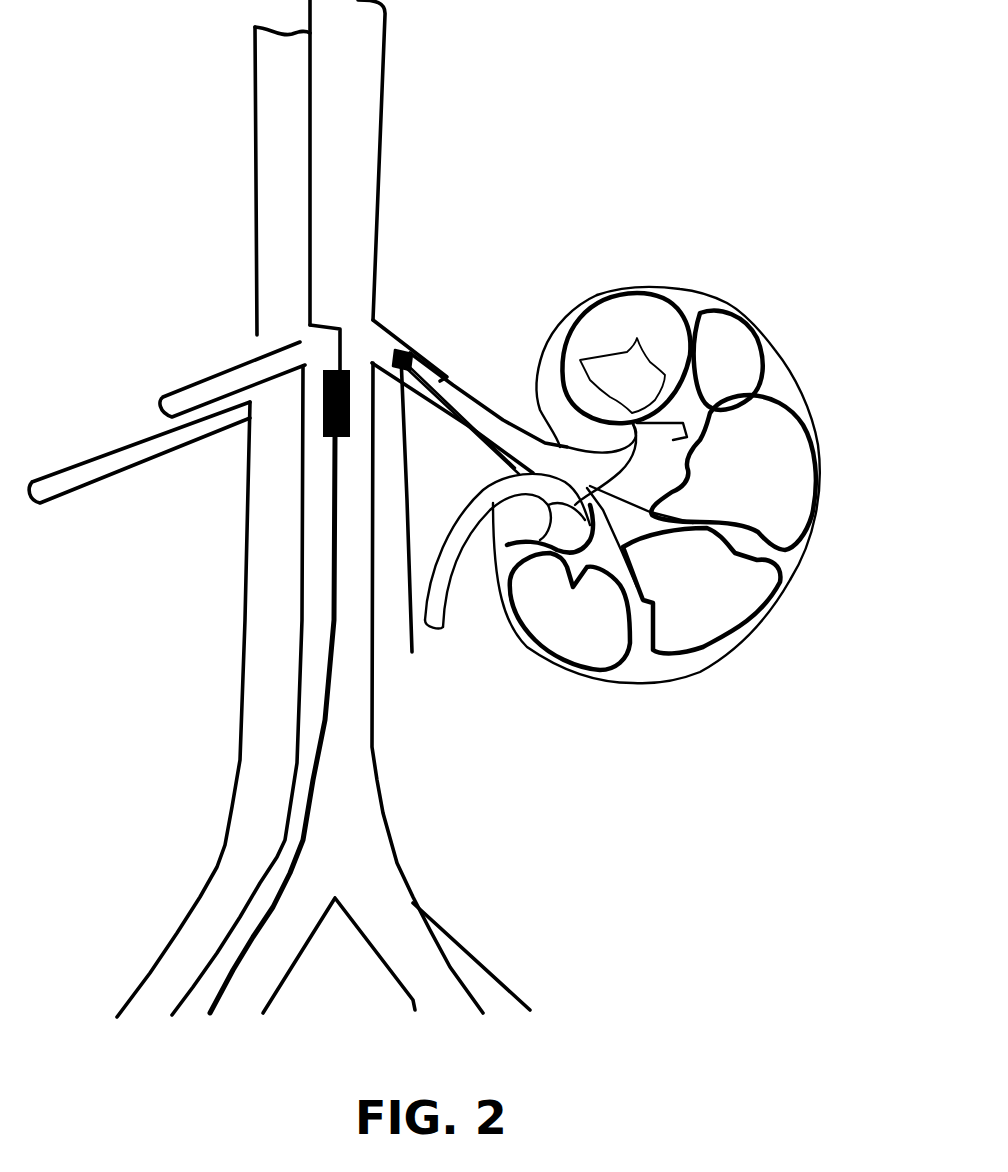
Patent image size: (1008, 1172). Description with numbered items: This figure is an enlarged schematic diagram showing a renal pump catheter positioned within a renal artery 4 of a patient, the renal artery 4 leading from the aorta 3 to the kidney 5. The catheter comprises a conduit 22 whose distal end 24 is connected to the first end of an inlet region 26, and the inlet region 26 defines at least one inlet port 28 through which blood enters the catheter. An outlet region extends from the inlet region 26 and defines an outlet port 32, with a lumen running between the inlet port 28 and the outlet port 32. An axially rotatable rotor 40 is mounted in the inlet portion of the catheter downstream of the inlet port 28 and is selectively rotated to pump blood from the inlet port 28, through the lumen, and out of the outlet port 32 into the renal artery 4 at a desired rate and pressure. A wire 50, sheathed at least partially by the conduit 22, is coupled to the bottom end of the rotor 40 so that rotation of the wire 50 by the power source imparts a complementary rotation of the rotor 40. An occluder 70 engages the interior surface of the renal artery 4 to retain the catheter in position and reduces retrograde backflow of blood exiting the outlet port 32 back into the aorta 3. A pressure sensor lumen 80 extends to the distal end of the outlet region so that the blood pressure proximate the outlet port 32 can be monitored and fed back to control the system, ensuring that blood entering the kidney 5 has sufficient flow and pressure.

The aorta 3 is at (350, 232).
The renal artery 4 is at (375, 333).
The kidney 5 is at (770, 331).
The conduit 22 is at (205, 725).
The pressure sensor lumen 80 is at (327, 573).
The distal end of the conduit 24 is at (340, 328).
The inlet region 26 is at (323, 382).
The inlet port 28 is at (323, 420).
The outlet port 32 is at (449, 377).
The rotor 40 is at (323, 428).
The wire 50 is at (297, 830).
The occluder 70 is at (427, 529).